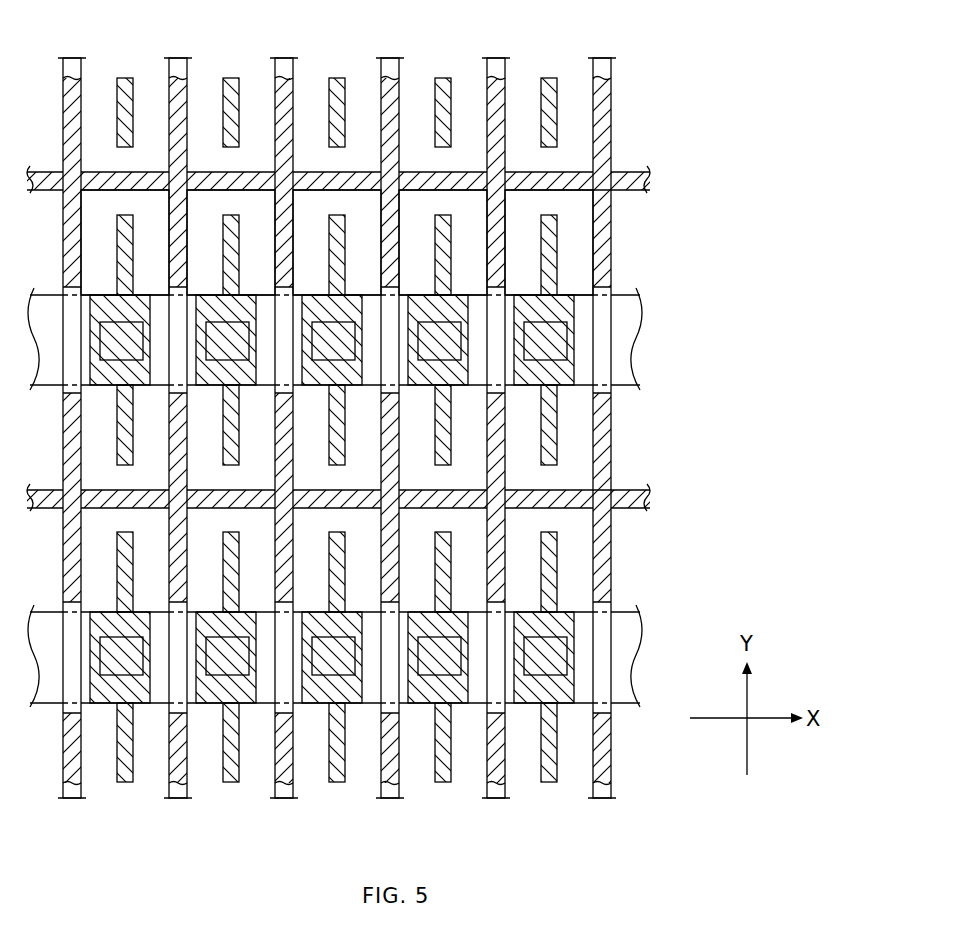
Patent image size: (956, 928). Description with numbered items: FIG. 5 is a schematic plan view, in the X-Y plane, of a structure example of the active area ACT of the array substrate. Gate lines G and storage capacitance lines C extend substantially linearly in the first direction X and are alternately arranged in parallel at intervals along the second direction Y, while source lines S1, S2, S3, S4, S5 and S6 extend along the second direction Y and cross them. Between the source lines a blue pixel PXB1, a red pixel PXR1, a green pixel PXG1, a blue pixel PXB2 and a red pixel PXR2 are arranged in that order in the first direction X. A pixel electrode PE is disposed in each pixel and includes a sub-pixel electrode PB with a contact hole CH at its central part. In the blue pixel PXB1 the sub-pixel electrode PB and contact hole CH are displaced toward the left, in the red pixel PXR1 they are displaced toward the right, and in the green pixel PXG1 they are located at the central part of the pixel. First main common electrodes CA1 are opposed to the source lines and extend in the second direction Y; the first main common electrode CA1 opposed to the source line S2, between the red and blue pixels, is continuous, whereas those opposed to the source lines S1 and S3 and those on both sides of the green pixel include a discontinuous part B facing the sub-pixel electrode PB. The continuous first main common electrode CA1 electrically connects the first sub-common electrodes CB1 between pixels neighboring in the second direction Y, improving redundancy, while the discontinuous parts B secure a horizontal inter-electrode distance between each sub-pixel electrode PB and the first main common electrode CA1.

The source line S1 is at (74, 62).
The source line S2 is at (180, 62).
The source line S3 is at (286, 62).
The source line S4 is at (392, 62).
The source line S5 is at (498, 62).
The source line S6 is at (604, 62).
The blue pixel PXB1 is at (98, 200).
The red pixel PXR1 is at (204, 200).
The green pixel PXG1 is at (310, 200).
The blue pixel PXB2 is at (416, 200).
The red pixel PXR2 is at (522, 200).
The gate line G is at (650, 182).
The storage capacitance line C is at (632, 347).
The first main common electrode CA1 is at (611, 134).
The first sub-common electrode CB1 is at (580, 192).
The sub-pixel electrode PB is at (102, 295).
The contact hole CH is at (139, 295).
The pixel electrode PE is at (117, 437).
The discontinuous part B is at (70, 365).
The active area ACT is at (638, 106).